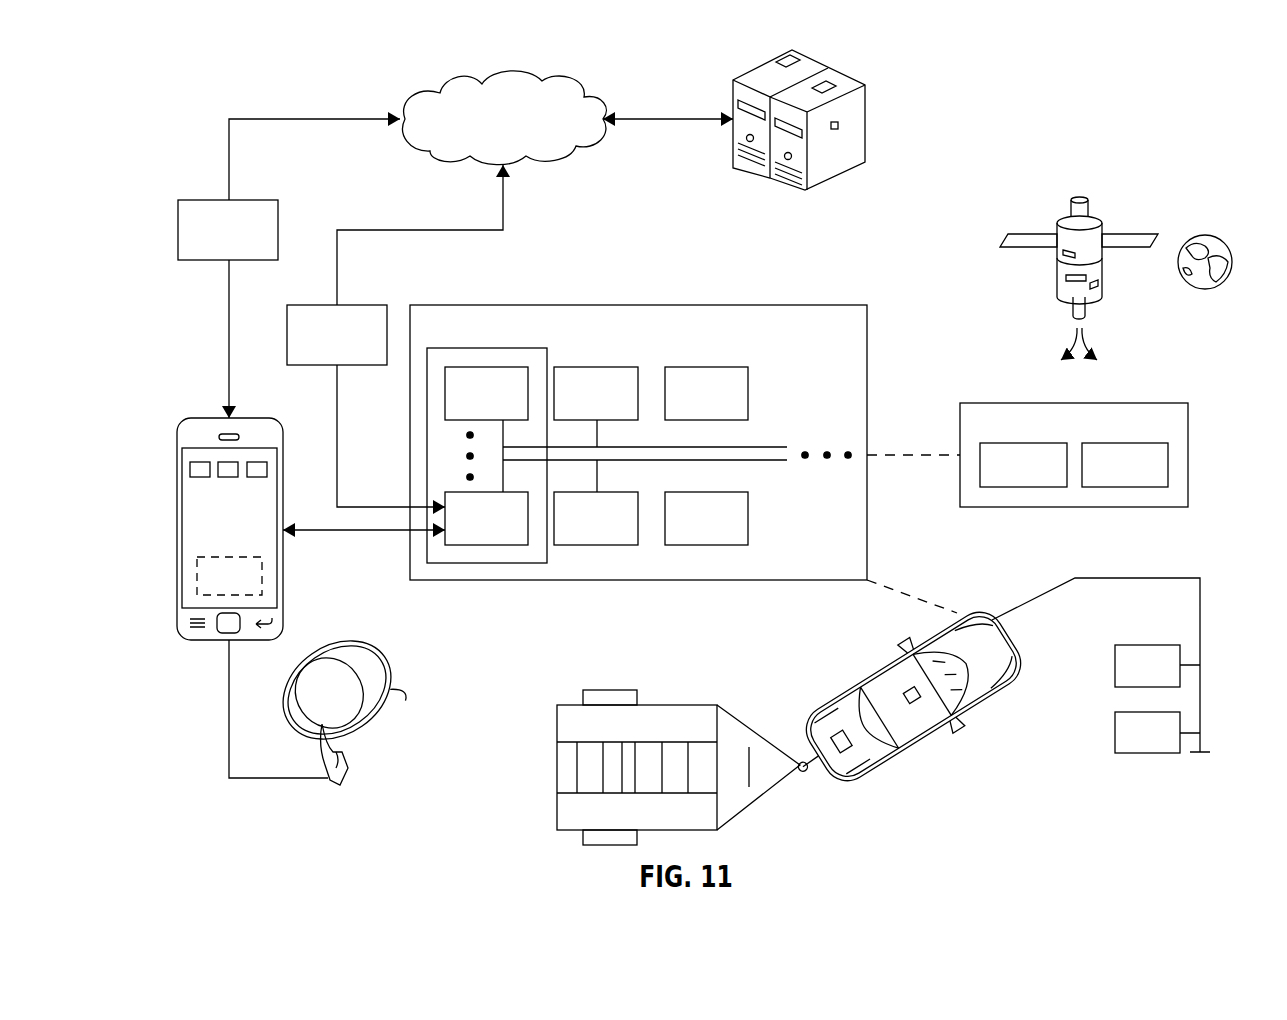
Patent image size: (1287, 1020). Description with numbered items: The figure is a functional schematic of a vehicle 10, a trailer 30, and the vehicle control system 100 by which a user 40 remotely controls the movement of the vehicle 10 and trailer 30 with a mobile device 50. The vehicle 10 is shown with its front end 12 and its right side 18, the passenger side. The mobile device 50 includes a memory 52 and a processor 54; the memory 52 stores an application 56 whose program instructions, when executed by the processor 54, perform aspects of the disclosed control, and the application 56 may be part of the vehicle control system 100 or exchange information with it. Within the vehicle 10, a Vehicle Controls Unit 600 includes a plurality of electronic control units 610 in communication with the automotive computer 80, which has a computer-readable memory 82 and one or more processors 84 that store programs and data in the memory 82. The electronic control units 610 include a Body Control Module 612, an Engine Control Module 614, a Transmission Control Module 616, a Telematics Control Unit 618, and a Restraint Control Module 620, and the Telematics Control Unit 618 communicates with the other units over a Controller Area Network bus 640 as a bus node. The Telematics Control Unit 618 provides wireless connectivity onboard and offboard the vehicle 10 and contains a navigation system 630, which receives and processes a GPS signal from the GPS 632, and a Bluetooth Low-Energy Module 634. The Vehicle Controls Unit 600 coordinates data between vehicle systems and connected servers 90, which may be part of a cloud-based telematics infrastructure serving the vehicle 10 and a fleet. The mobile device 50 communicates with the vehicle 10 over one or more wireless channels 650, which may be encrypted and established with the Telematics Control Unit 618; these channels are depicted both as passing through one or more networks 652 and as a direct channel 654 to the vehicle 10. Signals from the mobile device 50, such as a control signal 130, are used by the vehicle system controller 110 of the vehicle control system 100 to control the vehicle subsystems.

The vehicle 10 is at (892, 772).
The front end 12 is at (1010, 633).
The right side 18 is at (930, 737).
The trailer 30 is at (650, 760).
The user 40 is at (380, 653).
The mobile device 50 is at (163, 543).
The memory 52 is at (190, 468).
The processor 54 is at (223, 458).
The application 56 is at (258, 458).
The automotive computer 80 is at (1013, 403).
The computer-readable memory 82 is at (1033, 443).
The processor 84 is at (1133, 443).
The server 90 is at (873, 72).
The vehicle control system 100 is at (1200, 557).
The vehicle system controller 110 is at (1127, 680).
The control signal 130 is at (1127, 746).
The Vehicle Controls Unit 600 is at (476, 305).
The electronic control units 610 is at (770, 350).
The Body Control Module 612 is at (575, 407).
The Engine Control Module 614 is at (685, 407).
The Transmission Control Module 616 is at (575, 532).
The Telematics Control Unit 618 is at (497, 348).
The Restraint Control Module 620 is at (685, 532).
The Navigation system 630 is at (465, 407).
The GPS 632 is at (1078, 188).
The Bluetooth Low-Energy Module 634 is at (465, 532).
The Controller Area Network bus 640 is at (765, 462).
The wireless channel 650 is at (505, 193).
The network 652 is at (550, 82).
The channel 654 is at (365, 530).